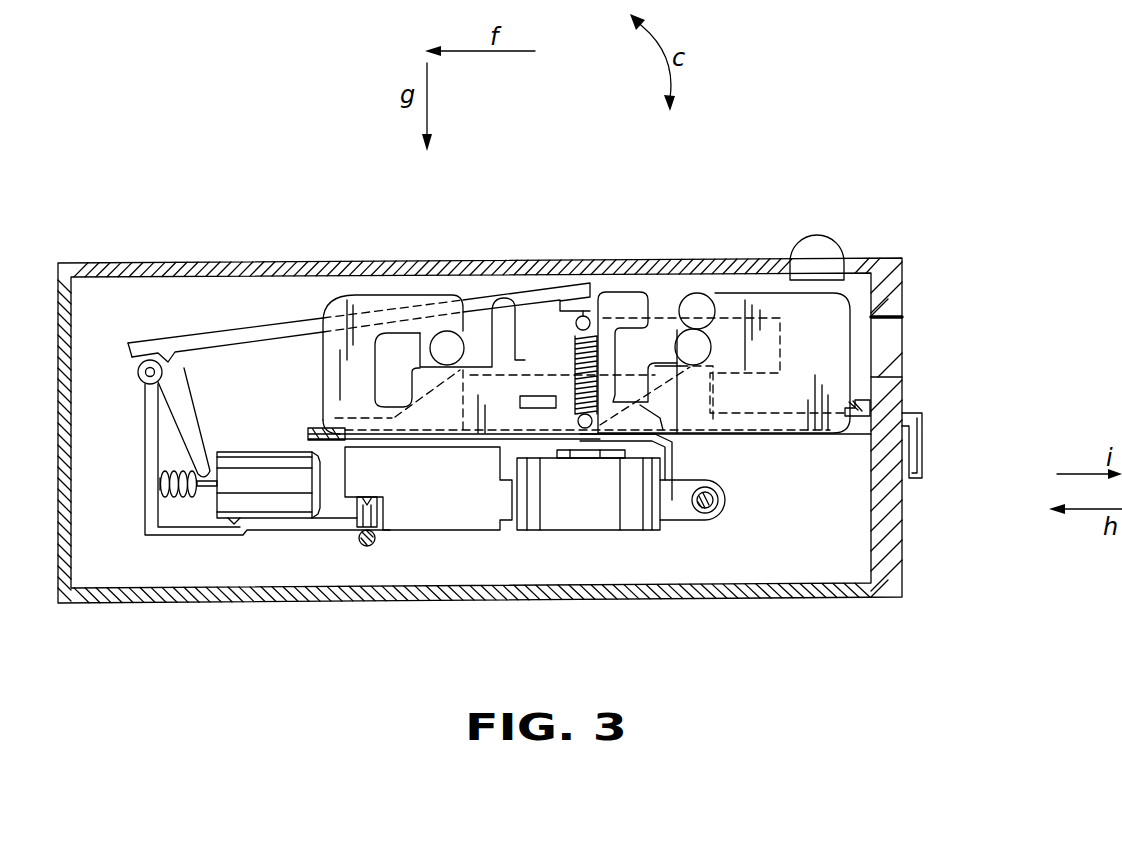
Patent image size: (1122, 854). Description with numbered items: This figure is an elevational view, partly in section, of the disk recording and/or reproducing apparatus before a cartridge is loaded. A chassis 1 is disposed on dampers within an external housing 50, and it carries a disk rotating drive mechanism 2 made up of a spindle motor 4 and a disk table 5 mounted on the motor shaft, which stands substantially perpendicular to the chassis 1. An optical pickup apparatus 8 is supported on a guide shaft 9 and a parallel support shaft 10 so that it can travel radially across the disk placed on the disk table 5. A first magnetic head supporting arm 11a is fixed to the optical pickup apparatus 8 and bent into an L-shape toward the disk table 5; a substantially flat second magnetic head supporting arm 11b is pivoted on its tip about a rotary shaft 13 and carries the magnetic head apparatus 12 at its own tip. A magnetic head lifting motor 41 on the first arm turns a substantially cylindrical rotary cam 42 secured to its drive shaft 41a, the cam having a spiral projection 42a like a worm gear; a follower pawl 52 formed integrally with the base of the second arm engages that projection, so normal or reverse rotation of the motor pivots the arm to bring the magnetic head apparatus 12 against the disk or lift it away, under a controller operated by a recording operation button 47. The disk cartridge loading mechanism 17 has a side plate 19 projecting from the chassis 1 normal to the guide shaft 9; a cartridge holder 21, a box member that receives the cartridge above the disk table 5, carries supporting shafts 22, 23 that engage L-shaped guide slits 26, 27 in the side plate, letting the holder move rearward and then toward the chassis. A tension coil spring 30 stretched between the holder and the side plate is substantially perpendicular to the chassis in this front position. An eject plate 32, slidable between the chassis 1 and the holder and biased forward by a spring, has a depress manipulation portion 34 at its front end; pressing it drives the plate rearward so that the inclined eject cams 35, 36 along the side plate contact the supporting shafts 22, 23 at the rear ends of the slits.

The chassis 1 is at (808, 440).
The disk rotating drive mechanism 2 is at (541, 549).
The spindle motor 4 is at (570, 530).
The disk table 5 is at (538, 395).
The optical pickup apparatus 8 is at (457, 530).
The guide shaft 9 is at (700, 514).
The support shaft 10 is at (367, 548).
The first magnetic head supporting arm 11a is at (272, 532).
The second magnetic head supporting arm 11b is at (258, 325).
The magnetic head apparatus 12 is at (598, 291).
The rotary shaft 13 is at (138, 377).
The disk cartridge loading mechanism 17 is at (798, 524).
The side plate 19 is at (837, 320).
The cartridge holder 21 is at (800, 357).
The supporting shaft 22 is at (698, 329).
The supporting shaft 23 is at (447, 331).
The guide slit 26 is at (617, 350).
The guide slit 27 is at (382, 357).
The tension coil spring 30 is at (583, 316).
The eject plate 32 is at (860, 413).
The depress manipulation portion 34 is at (923, 447).
The eject cam 35 is at (665, 420).
The eject cam 36 is at (442, 402).
The magnetic head lifting motor 41 is at (277, 465).
The drive shaft 41a is at (202, 513).
The rotary cam 42 is at (172, 457).
The spiral projection 42a is at (173, 503).
The recording operation button 47 is at (829, 243).
The external housing 50 is at (137, 262).
The follower pawl 52 is at (190, 397).